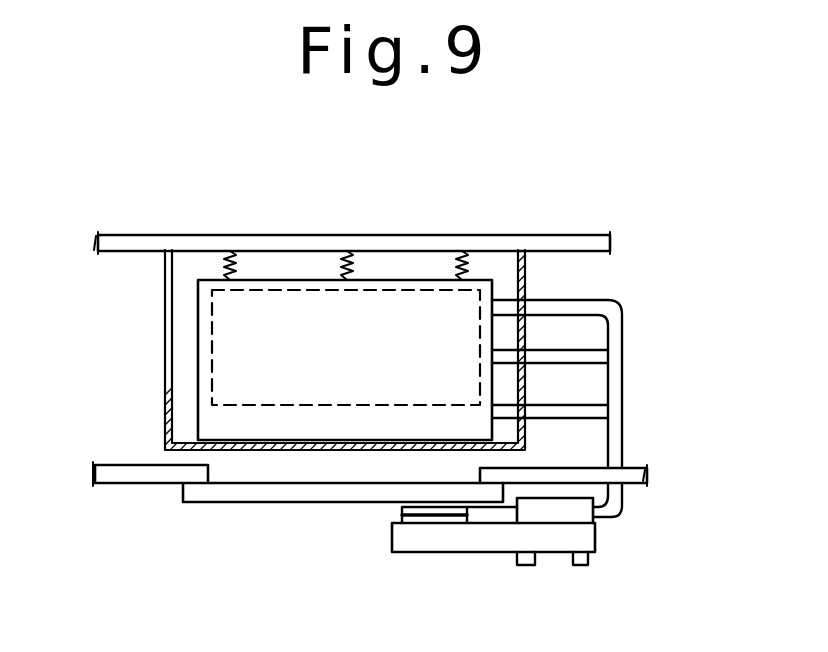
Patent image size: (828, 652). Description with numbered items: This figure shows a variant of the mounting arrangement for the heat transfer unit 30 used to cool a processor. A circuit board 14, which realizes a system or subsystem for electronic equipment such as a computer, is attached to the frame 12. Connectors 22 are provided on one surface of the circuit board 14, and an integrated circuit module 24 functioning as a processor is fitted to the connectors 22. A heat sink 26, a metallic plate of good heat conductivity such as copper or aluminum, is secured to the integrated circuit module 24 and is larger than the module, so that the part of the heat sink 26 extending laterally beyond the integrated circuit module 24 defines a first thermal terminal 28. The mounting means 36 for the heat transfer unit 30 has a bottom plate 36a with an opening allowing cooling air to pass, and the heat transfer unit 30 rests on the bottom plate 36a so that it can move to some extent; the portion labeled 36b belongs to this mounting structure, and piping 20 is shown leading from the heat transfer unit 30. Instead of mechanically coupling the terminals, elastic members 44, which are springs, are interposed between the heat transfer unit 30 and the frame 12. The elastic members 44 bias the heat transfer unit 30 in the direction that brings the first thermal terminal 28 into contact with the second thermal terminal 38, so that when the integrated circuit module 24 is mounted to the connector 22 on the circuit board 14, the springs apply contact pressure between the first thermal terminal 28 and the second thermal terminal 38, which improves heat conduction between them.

The frame 12 is at (312, 240).
The circuit board 14 is at (243, 495).
The piping 20 is at (617, 385).
The connector 22 is at (410, 510).
The integrated circuit module 24 is at (427, 518).
The heat sink 26 is at (477, 542).
The first thermal terminal 28 is at (555, 542).
The heat transfer unit 30 is at (200, 340).
The mounting means 36 is at (530, 272).
The bottom plate 36a is at (495, 268).
The inner box 36b is at (272, 317).
The second thermal terminal 38 is at (578, 515).
The elastic member 44 is at (224, 262).